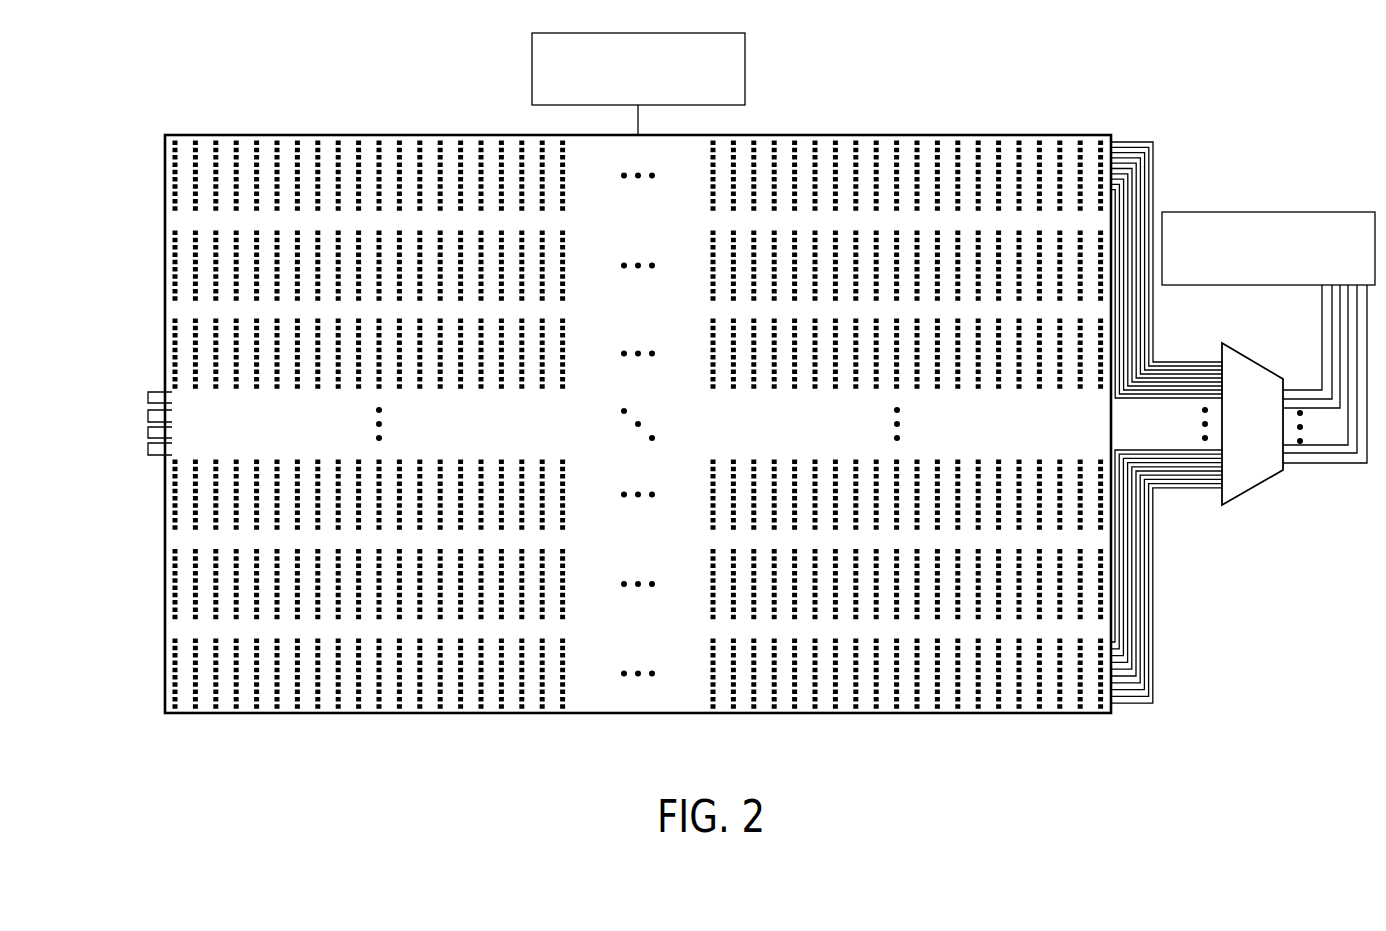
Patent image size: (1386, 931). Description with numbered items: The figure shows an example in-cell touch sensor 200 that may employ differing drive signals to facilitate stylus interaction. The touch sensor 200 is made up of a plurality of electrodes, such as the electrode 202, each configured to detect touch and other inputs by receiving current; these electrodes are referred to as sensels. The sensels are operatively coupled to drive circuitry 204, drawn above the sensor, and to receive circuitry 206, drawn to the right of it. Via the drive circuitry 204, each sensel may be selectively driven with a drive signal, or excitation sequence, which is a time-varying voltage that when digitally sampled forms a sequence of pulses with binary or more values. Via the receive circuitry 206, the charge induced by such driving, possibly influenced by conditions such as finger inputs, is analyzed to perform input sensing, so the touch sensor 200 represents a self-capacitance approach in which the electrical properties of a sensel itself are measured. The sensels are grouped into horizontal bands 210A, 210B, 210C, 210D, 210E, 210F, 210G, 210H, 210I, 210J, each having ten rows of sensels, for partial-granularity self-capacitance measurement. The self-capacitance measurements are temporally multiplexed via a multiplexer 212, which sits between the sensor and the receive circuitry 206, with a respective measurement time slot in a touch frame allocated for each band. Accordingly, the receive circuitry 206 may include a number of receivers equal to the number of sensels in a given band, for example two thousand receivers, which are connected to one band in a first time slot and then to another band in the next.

The in-cell touch sensor 200 is at (885, 79).
The electrode 202 is at (278, 140).
The drive circuitry 204 is at (623, 92).
The receive circuitry 206 is at (1253, 272).
The horizontal band 210A is at (165, 140).
The horizontal band 210B is at (165, 230).
The horizontal band 210C is at (165, 318).
The horizontal band 210D is at (148, 397).
The horizontal band 210E is at (148, 416).
The horizontal band 210F is at (148, 432).
The horizontal band 210G is at (148, 449).
The horizontal band 210H is at (165, 459).
The horizontal band 210I is at (165, 549).
The horizontal band 210J is at (165, 638).
The multiplexer 212 is at (1238, 448).